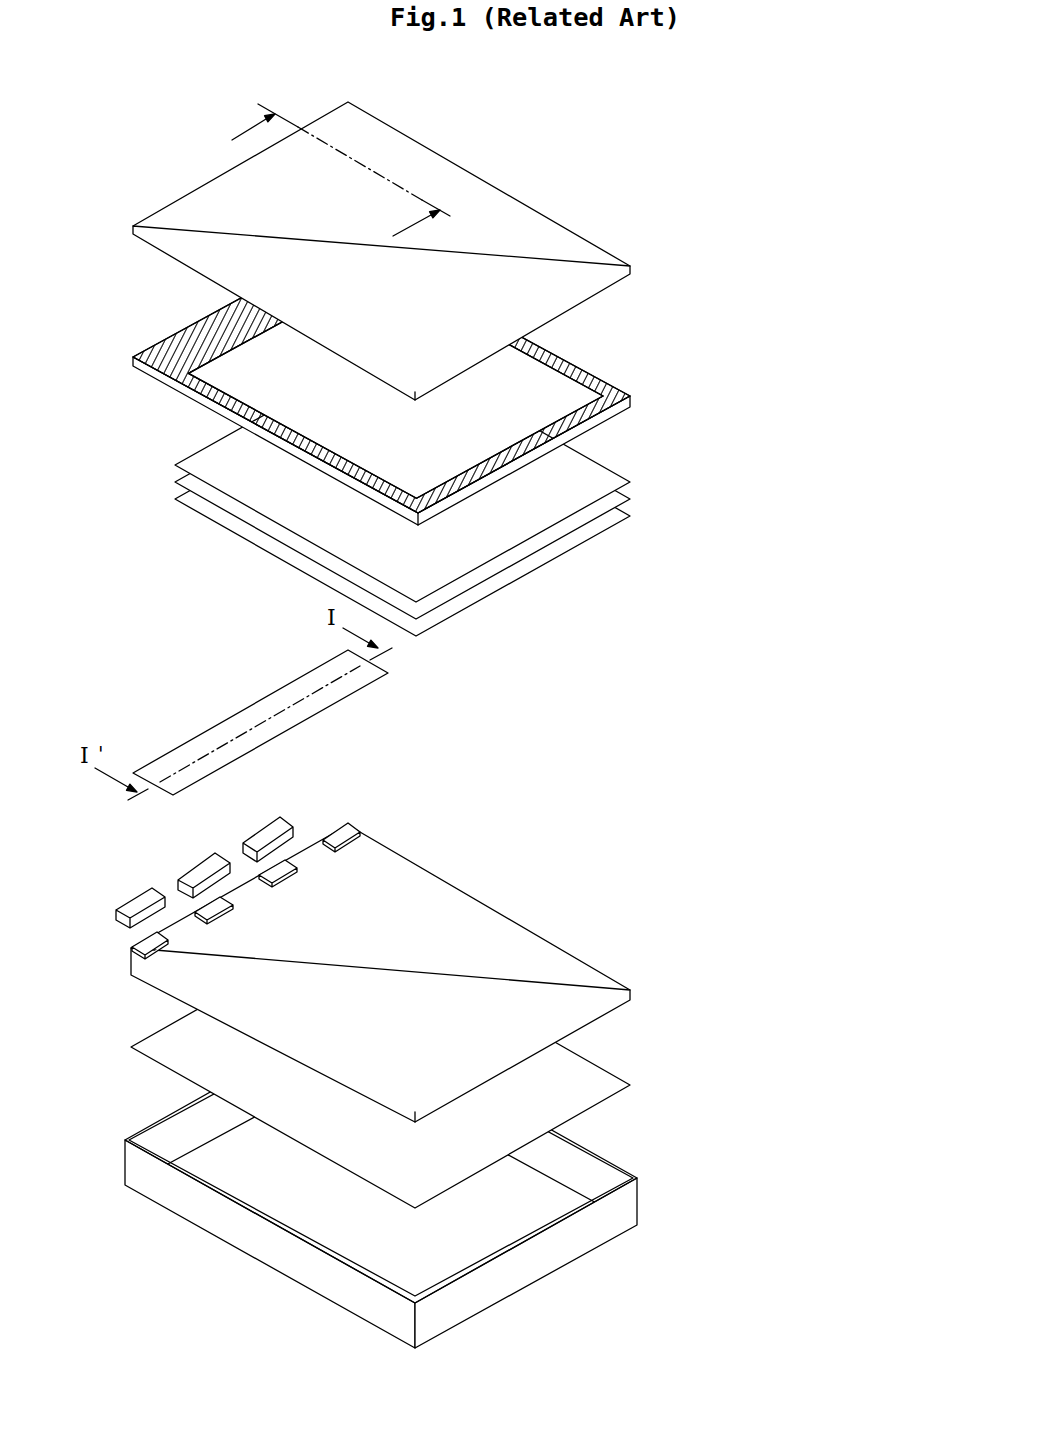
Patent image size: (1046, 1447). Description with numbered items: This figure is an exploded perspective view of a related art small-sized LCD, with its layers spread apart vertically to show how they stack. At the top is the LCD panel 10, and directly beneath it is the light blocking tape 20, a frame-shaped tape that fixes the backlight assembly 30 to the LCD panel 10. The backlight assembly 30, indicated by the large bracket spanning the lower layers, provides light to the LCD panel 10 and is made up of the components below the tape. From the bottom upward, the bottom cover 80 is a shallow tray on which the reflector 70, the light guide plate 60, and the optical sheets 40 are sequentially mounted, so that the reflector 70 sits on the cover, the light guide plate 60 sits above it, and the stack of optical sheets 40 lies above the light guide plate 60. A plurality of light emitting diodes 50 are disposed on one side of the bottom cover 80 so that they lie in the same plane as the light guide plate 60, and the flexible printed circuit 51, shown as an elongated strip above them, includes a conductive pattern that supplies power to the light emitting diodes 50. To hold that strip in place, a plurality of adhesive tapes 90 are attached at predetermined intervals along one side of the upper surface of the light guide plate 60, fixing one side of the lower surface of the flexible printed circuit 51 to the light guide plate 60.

The LCD panel 10 is at (593, 262).
The light blocking tape 20 is at (613, 393).
The backlight assembly 30 is at (750, 362).
The optical sheets 40 is at (648, 482).
The light emitting diodes 50 is at (135, 908).
The flexible printed circuit 51 is at (221, 732).
The light guide plate 60 is at (605, 990).
The reflector 70 is at (605, 1085).
The bottom cover 80 is at (605, 1168).
The adhesive tapes 90 is at (343, 828).